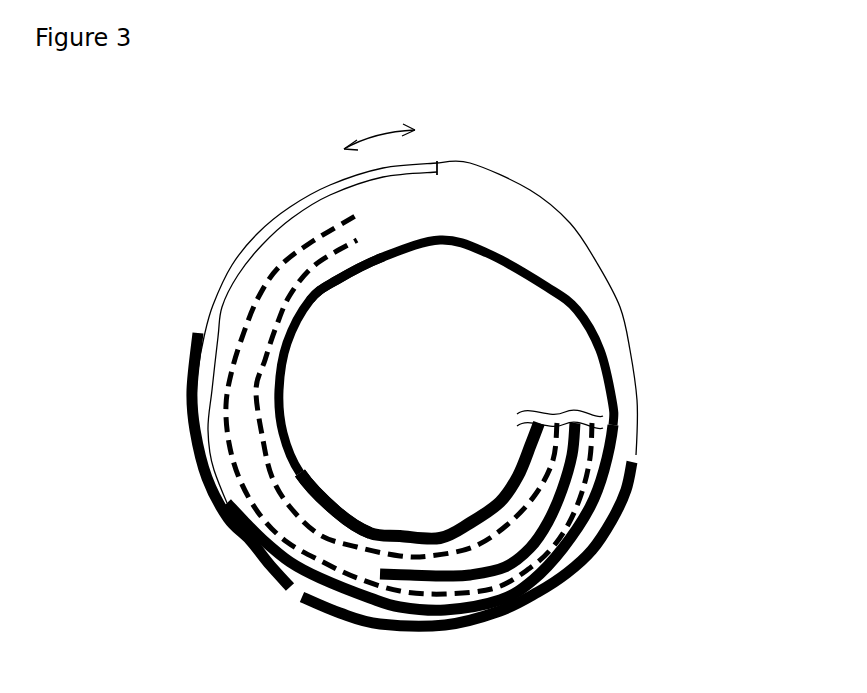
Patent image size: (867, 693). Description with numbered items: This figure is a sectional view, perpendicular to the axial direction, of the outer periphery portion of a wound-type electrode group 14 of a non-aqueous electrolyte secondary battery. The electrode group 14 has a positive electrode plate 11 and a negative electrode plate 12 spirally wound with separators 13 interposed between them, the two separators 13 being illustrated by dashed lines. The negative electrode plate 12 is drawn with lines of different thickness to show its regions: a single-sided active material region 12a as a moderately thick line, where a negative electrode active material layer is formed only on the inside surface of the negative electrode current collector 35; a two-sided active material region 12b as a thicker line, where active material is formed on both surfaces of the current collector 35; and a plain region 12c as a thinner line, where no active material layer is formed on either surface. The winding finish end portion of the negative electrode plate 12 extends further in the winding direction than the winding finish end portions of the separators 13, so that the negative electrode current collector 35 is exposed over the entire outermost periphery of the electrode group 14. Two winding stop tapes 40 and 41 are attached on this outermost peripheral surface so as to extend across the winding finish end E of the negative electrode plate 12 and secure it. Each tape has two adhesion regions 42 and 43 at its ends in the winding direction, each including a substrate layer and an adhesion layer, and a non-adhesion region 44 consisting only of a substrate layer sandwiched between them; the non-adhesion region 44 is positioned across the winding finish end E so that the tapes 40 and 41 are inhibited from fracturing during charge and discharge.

The positive electrode plate 11 is at (597, 478).
The negative electrode plate 12 is at (267, 253).
The single-sided active material region 12a is at (370, 260).
The two-sided active material region 12b is at (337, 513).
The plain region 12c is at (255, 290).
The separator 13 is at (532, 498).
The electrode group 14 is at (580, 305).
The negative electrode current collector 35 is at (302, 212).
The tape 40 is at (436, 275).
The tape 41 is at (533, 190).
The adhesion region 42 is at (536, 608).
The adhesion region 43 is at (225, 530).
The non-adhesion region 44 is at (634, 328).
The winding finish end E is at (440, 164).